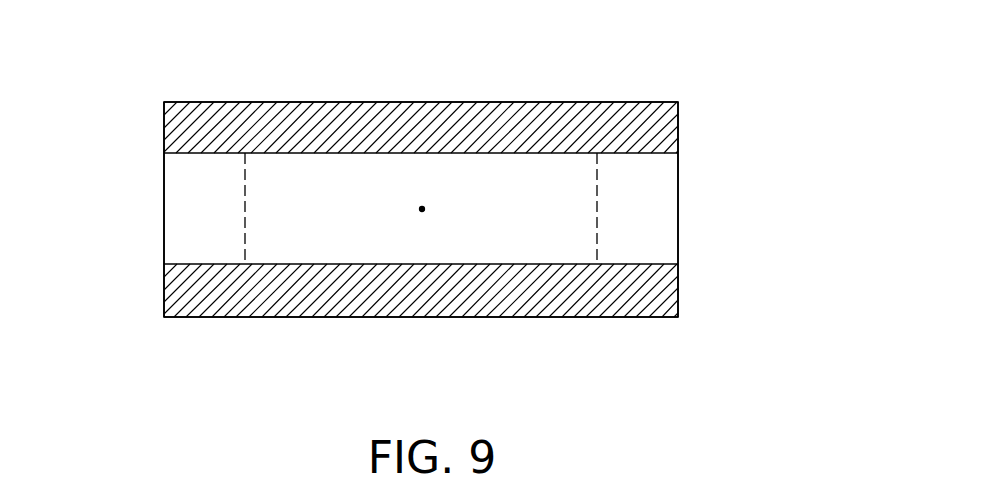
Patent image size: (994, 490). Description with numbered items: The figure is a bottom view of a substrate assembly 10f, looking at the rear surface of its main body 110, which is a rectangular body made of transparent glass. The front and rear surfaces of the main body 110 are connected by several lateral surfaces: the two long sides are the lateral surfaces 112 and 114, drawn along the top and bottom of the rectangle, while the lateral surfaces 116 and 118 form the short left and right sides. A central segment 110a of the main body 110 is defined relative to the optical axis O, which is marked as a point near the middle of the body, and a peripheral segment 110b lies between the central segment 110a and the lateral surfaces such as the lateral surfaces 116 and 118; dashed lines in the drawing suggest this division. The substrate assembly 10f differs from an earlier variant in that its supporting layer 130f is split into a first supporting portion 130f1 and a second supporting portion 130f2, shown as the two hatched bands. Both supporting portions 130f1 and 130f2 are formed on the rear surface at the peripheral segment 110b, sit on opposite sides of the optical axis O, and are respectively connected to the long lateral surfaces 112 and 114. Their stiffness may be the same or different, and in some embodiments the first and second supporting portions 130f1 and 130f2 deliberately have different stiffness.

The substrate assembly 10f is at (728, 85).
The main body 110 is at (462, 185).
The central segment 110a is at (325, 230).
The peripheral segment 110b is at (200, 230).
The lateral surface 112 is at (363, 101).
The lateral surface 114 is at (538, 318).
The lateral surface 116 is at (163, 206).
The lateral surface 118 is at (679, 205).
The optical axis O is at (422, 212).
The supporting layer 130f is at (568, 136).
The first supporting portion 130f1 is at (660, 118).
The second supporting portion 130f2 is at (660, 297).